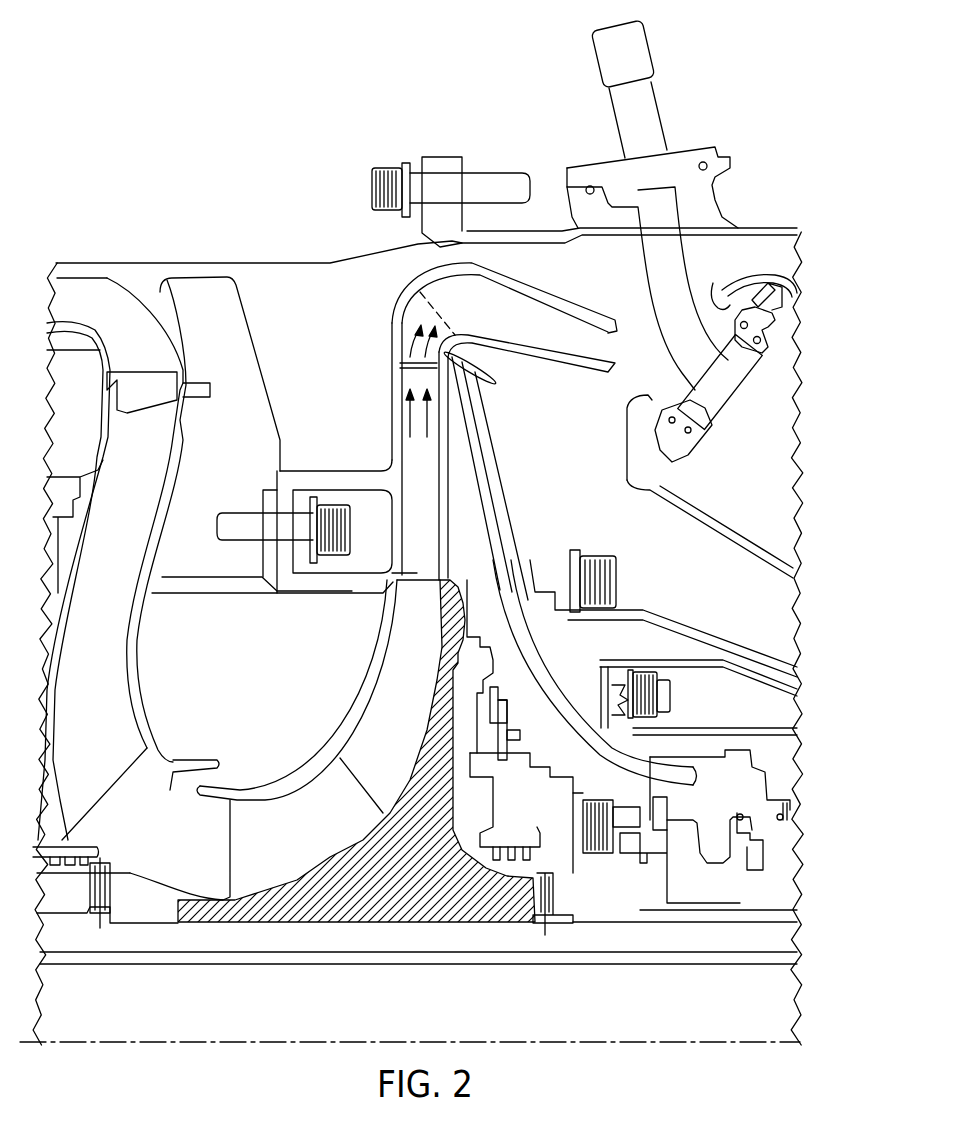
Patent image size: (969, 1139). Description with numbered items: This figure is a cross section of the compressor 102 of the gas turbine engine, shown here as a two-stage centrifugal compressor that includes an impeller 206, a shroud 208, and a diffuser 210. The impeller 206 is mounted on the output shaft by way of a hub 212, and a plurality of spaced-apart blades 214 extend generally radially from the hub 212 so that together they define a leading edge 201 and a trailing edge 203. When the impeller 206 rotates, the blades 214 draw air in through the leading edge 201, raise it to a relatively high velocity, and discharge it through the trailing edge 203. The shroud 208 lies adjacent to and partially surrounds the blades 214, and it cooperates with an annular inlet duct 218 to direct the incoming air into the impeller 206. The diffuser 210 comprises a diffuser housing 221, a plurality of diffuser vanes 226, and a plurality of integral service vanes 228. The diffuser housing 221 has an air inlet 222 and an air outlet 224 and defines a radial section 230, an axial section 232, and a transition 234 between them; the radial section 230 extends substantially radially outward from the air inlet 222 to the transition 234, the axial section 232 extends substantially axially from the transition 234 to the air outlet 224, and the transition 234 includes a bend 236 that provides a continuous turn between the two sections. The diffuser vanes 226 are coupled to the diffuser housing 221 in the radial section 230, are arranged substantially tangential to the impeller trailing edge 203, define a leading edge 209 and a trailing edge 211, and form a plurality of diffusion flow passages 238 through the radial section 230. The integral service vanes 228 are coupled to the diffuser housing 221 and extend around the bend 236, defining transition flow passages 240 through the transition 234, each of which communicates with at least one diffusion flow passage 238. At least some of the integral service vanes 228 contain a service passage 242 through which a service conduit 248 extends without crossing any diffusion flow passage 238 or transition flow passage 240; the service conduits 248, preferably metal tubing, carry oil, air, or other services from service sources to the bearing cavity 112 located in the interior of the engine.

The compressor 102 is at (143, 250).
The bearing cavity 112 is at (713, 770).
The leading edge 201 is at (243, 846).
The trailing edge 203 is at (390, 603).
The impeller 206 is at (423, 897).
The shroud 208 is at (247, 790).
The leading edge 209 is at (420, 530).
The diffuser 210 is at (380, 450).
The trailing edge 211 is at (413, 377).
The hub 212 is at (450, 859).
The blades 214 is at (425, 734).
The annular inlet duct 218 is at (167, 793).
The diffuser housing 221 is at (378, 297).
The air inlet 222 is at (387, 583).
The air outlet 224 is at (618, 352).
The diffuser vanes 226 is at (423, 493).
The integral service vanes 228 is at (518, 327).
The radial section 230 is at (436, 463).
The axial section 232 is at (557, 318).
The transition 234 is at (490, 283).
The bend 236 is at (470, 382).
The diffusion flow passages 238 is at (410, 417).
The transition flow passages 240 is at (410, 337).
The service passage 242 is at (421, 292).
The service conduit 248 is at (380, 234).